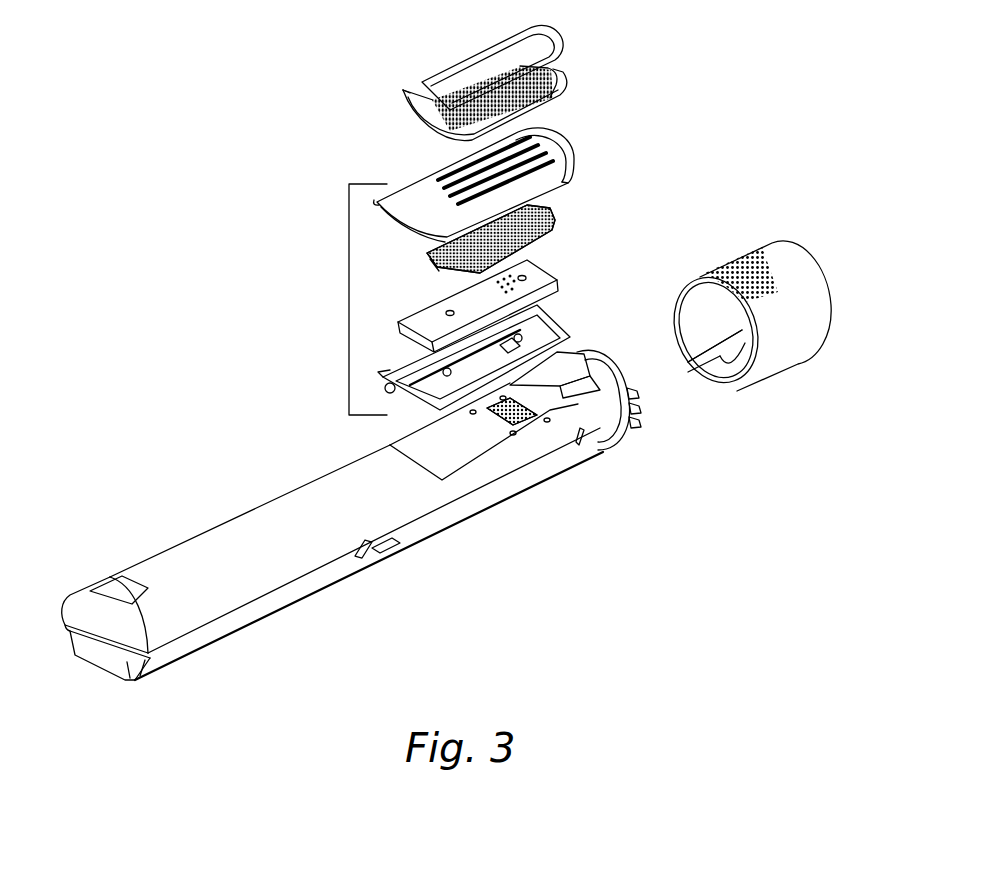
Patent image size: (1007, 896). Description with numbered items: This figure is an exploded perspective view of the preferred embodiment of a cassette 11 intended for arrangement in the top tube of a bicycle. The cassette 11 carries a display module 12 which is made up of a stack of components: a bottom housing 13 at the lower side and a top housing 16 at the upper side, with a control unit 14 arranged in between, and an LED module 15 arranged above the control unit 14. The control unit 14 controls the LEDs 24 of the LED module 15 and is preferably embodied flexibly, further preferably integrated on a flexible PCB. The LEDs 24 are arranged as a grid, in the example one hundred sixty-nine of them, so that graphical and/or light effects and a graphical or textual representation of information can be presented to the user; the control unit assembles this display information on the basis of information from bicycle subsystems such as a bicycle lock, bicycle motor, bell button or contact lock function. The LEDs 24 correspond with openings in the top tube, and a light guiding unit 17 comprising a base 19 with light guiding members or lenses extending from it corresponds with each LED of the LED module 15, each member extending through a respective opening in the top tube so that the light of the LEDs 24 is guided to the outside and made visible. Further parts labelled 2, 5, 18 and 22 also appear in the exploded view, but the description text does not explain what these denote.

The sleeve 2 is at (780, 392).
The slot of sleeve 5 is at (732, 372).
The cassette 11 is at (428, 548).
The display module 12 is at (349, 298).
The bottom housing 13 is at (566, 337).
The control unit 14 is at (560, 270).
The LED module 15 is at (556, 222).
The top housing 16 is at (574, 158).
The light guiding unit 17 is at (566, 85).
The cover 18 is at (566, 46).
The base 19 is at (559, 72).
The pins 22 is at (403, 90).
The LEDs 24 is at (571, 184).